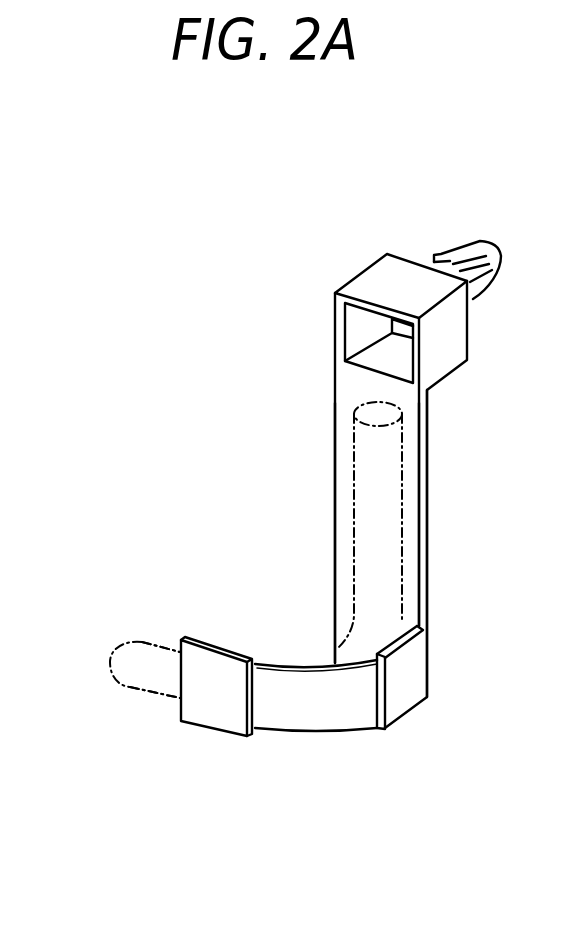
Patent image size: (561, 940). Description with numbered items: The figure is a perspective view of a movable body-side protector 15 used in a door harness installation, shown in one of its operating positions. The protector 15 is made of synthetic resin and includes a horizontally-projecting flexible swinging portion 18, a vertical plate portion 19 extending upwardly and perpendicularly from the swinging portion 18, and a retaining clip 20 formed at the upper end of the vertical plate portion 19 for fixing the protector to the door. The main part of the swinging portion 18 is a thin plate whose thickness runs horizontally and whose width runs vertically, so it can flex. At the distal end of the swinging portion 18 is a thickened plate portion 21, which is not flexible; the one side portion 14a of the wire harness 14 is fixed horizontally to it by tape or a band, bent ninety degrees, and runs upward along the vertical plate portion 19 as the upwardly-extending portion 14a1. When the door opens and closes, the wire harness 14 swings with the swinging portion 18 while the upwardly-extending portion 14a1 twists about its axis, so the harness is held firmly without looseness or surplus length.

The wire harness 14 is at (119, 679).
The one side portion of the wire harness 14a is at (134, 634).
The upwardly-extending portion 14a1 is at (346, 523).
The protector 15 is at (314, 425).
The swinging portion 18 is at (322, 699).
The vertical plate portion 19 is at (327, 477).
The retaining clip 20 is at (461, 232).
The thickened plate portion 21 is at (195, 699).